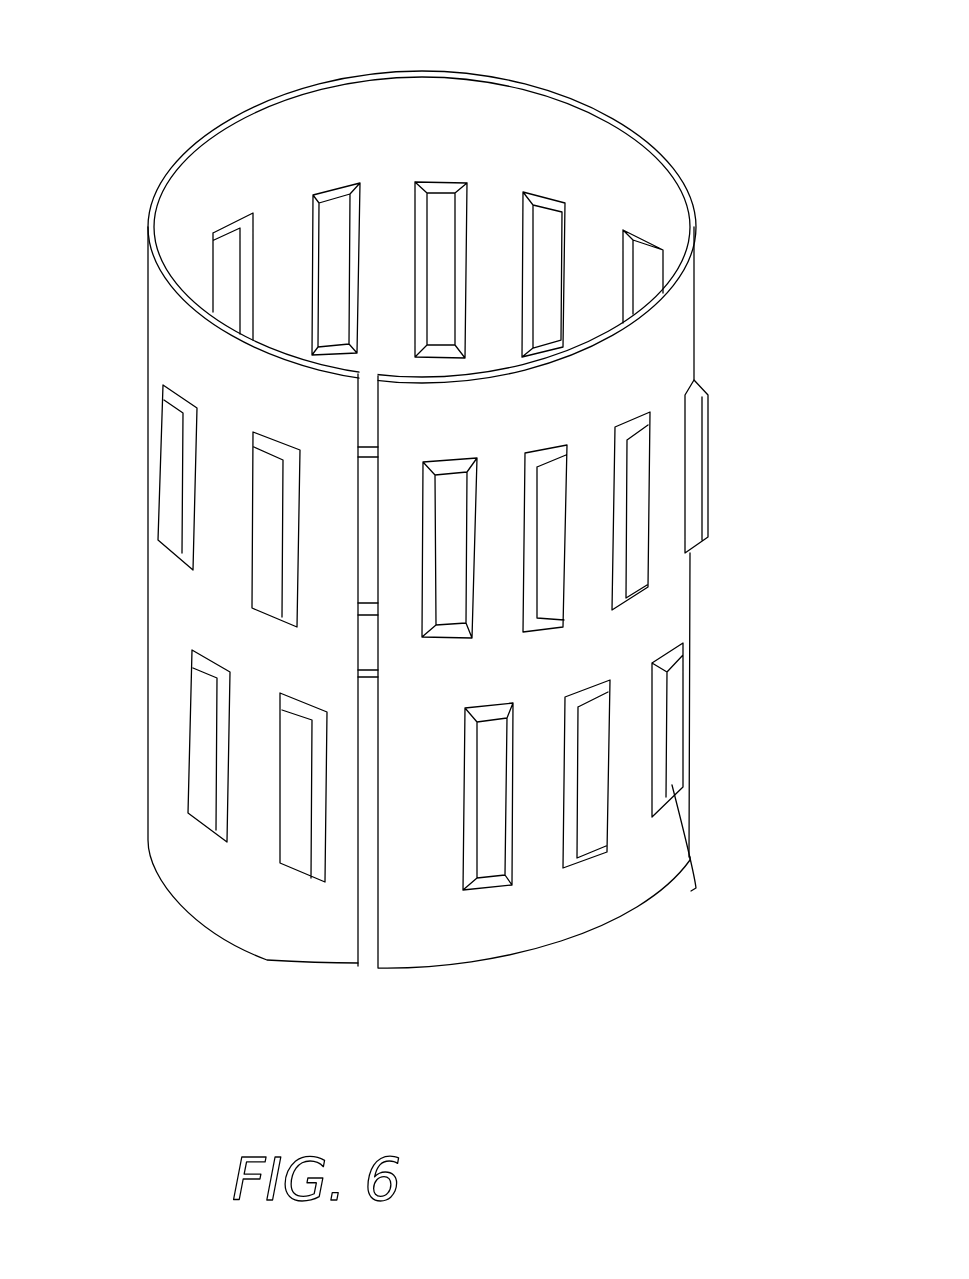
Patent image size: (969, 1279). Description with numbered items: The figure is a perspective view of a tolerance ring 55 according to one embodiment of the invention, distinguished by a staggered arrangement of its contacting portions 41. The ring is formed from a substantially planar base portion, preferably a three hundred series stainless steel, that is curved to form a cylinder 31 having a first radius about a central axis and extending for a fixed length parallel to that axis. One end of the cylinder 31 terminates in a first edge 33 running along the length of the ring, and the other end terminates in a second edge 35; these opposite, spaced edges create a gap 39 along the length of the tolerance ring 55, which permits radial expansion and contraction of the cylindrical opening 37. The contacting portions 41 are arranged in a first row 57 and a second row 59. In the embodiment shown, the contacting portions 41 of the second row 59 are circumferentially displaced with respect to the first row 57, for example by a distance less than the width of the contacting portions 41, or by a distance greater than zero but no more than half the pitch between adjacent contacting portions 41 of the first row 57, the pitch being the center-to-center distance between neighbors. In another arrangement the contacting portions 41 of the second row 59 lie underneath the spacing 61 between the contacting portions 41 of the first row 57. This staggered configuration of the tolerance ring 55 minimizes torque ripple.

The cylinder 31 is at (476, 529).
The first edge 33 is at (320, 937).
The second edge 35 is at (395, 928).
The cylindrical opening 37 is at (328, 123).
The gap 39 is at (358, 807).
The contacting portions 41 is at (480, 616).
The tolerance ring 55 is at (480, 529).
The first row 57 is at (480, 474).
The second row 59 is at (597, 817).
The spacing 61 is at (215, 428).